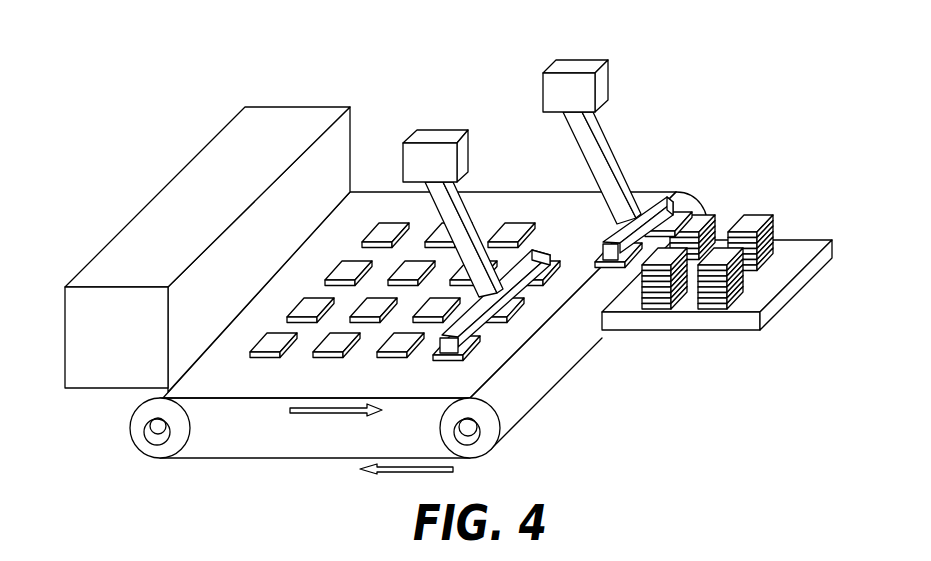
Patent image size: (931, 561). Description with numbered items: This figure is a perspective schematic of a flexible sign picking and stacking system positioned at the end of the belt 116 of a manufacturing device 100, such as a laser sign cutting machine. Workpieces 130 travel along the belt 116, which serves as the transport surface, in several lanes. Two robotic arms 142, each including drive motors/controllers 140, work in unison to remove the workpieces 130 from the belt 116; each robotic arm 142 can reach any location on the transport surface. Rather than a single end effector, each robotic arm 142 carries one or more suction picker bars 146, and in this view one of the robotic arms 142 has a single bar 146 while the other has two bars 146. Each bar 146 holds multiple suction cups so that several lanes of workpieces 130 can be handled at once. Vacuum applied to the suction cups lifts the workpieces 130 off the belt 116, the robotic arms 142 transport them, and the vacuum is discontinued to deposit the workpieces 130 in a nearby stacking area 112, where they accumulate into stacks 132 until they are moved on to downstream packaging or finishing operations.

The manufacturing device 100 is at (156, 195).
The stacking area 112 is at (723, 324).
The belt 116 is at (293, 458).
The workpieces 130 is at (268, 334).
The stacks 132 is at (750, 218).
The drive motors/controllers 140 is at (403, 152).
The robotic arms 142 is at (462, 200).
The suction picker bars 146 is at (520, 287).